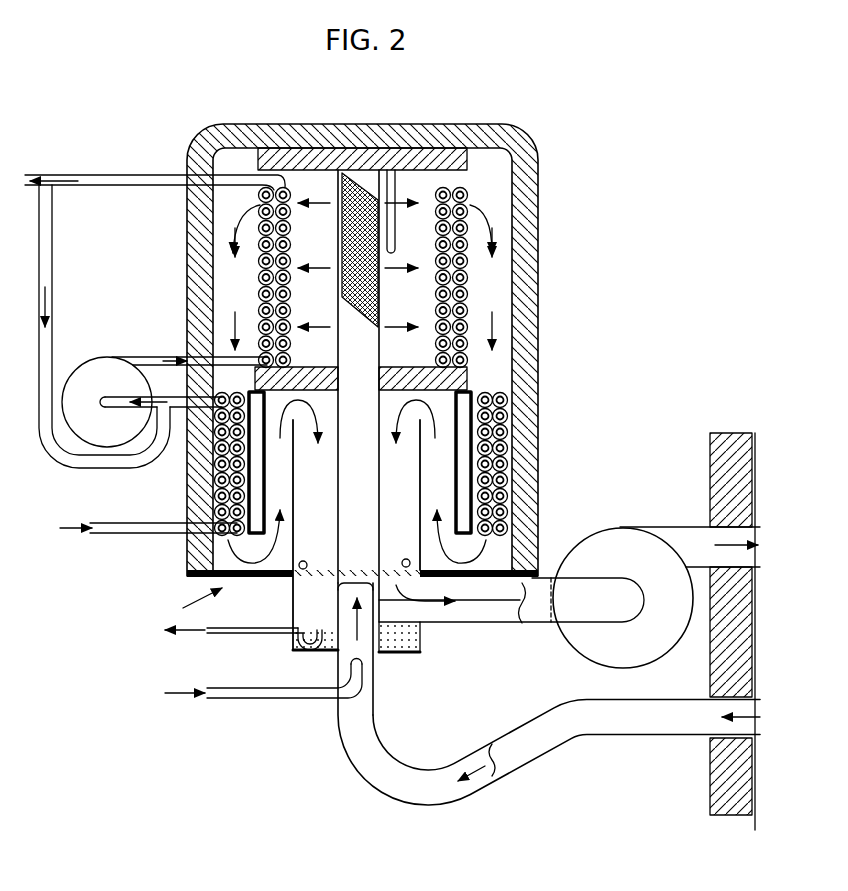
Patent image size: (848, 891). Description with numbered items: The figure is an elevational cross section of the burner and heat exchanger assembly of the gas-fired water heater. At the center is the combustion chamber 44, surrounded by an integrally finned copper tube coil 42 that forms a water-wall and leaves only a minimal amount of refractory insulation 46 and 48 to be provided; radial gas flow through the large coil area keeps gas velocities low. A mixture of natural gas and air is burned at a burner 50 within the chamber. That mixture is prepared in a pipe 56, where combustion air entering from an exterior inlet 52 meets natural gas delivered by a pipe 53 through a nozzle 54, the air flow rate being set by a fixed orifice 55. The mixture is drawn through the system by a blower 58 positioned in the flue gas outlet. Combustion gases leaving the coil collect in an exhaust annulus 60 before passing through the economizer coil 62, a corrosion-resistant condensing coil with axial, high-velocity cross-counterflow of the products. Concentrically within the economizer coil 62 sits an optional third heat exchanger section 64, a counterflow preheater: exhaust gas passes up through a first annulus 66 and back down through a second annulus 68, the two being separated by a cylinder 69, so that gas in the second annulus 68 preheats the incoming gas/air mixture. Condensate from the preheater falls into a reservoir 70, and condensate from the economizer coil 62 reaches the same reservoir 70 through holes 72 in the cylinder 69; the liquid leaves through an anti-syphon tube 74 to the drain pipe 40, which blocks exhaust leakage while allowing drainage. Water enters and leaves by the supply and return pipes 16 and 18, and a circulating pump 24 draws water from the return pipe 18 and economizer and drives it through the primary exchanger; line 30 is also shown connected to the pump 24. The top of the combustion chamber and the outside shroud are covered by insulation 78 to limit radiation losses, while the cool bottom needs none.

The supply pipe 16 is at (112, 532).
The return pipe 18 is at (103, 175).
The circulating pump 24 is at (84, 358).
The return line 30 is at (160, 396).
The drain pipe 40 is at (235, 636).
The integrally finned copper tube coil 42 is at (462, 292).
The combustion chamber 44 is at (465, 303).
The refractory insulation 46 is at (405, 153).
The refractory insulation 48 is at (470, 380).
The burner 50 is at (340, 185).
The exterior inlet 52 is at (755, 800).
The pipe 53 is at (265, 699).
The nozzle 54 is at (373, 676).
The fixed orifice 55 is at (340, 733).
The pipe 56 is at (420, 614).
The blower 58 is at (556, 648).
The exhaust annulus 60 is at (522, 266).
The economizer coil 62 is at (420, 472).
The third heat exchanger section 64 is at (316, 509).
The first annulus 66 is at (213, 495).
The second annulus 68 is at (315, 613).
The cylinder 69 is at (485, 460).
The reservoir 70 is at (412, 650).
The holes 72 is at (302, 569).
The anti-syphon tube 74 is at (303, 645).
The insulation 78 is at (538, 185).